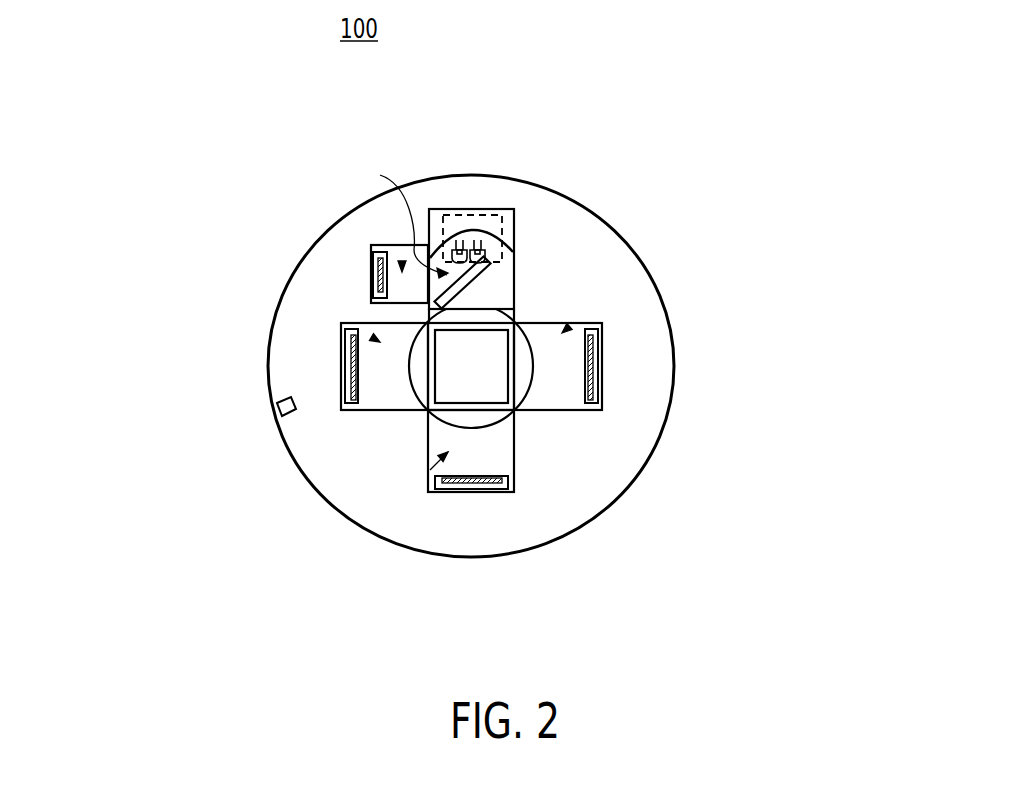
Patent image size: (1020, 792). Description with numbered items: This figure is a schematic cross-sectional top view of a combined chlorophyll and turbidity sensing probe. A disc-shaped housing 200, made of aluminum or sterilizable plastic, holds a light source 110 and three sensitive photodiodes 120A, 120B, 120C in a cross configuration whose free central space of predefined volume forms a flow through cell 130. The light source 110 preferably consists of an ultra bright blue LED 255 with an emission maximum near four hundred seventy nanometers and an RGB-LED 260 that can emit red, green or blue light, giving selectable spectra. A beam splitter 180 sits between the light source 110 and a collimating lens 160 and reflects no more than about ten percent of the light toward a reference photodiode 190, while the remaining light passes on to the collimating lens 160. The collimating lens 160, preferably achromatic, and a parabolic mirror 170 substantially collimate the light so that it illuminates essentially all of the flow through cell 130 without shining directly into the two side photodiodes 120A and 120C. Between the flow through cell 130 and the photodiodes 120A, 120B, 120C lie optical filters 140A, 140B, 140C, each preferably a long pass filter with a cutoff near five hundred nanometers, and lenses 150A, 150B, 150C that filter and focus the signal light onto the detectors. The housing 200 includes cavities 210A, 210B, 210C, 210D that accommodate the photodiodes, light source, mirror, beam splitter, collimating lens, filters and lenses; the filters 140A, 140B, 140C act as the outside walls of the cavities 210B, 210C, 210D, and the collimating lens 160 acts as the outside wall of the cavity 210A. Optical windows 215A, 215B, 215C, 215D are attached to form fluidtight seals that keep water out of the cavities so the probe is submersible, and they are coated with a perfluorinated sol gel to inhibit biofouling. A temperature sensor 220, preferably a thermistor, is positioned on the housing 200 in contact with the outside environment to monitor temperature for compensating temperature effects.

The light source 110 is at (487, 228).
The photodiode 120A is at (342, 364).
The photodiode 120B is at (478, 490).
The photodiode 120C is at (603, 390).
The flow through cell 130 is at (505, 318).
The optical filter 140A is at (428, 420).
The optical filter 140B is at (516, 418).
The optical filter 140C is at (514, 367).
The lens 150A is at (430, 408).
The lens 150B is at (515, 412).
The lens 150C is at (515, 410).
The collimating lens 160 is at (482, 345).
The parabolic mirror 170 is at (437, 248).
The beam splitter 180 is at (517, 258).
The reference photodiode 190 is at (371, 272).
The disc-shaped housing 200 is at (512, 377).
The cavity 210A is at (402, 272).
The cavity 210B is at (380, 342).
The cavity 210C is at (430, 470).
The cavity 210D is at (562, 333).
The optical window 215A is at (368, 250).
The optical window 215B is at (427, 357).
The optical window 215C is at (428, 413).
The optical window 215D is at (602, 350).
The temperature sensor 220 is at (280, 408).
The ultra bright blue LED 255 is at (514, 248).
The RGB-LED 260 is at (471, 245).